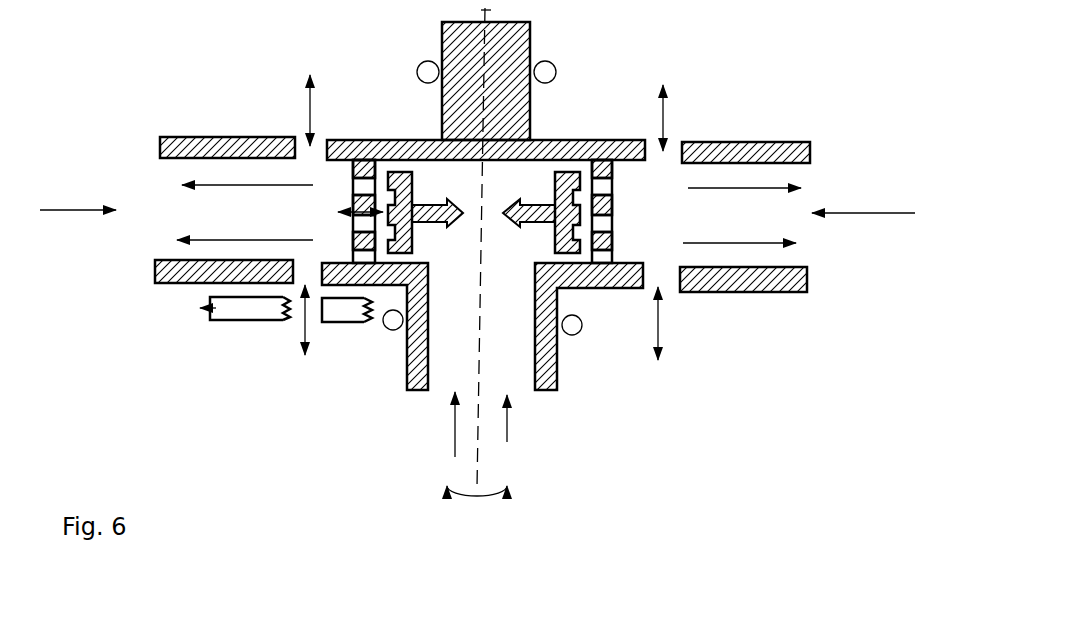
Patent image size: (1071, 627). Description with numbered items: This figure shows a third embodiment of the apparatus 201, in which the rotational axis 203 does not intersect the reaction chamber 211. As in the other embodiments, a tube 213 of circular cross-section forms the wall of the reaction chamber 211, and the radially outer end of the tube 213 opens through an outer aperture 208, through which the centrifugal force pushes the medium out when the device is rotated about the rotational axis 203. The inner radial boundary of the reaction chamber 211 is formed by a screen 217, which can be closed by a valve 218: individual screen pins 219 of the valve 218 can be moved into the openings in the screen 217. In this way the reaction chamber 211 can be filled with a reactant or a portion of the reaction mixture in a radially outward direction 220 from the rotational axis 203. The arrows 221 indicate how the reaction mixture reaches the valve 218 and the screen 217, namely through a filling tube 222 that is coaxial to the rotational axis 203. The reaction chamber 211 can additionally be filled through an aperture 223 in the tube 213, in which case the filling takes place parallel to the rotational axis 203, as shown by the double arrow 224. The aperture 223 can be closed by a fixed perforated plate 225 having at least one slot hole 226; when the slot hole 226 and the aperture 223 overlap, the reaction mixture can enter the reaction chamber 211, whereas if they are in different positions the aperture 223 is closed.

The apparatus 201 is at (700, 398).
The rotational axis 203 is at (477, 462).
The outer aperture 208 is at (152, 190).
The reaction chamber 211 is at (312, 228).
The tube 213 is at (207, 137).
The screen 217 is at (352, 172).
The valve 218 is at (432, 223).
The screen pins 219 is at (379, 175).
The radially outward direction 220 is at (381, 165).
The arrows 221 is at (507, 425).
The filling tube 222 is at (560, 370).
The aperture 223 is at (235, 285).
The double arrow 224 is at (300, 325).
The fixed perforated plate 225 is at (198, 310).
The slot hole 226 is at (297, 322).